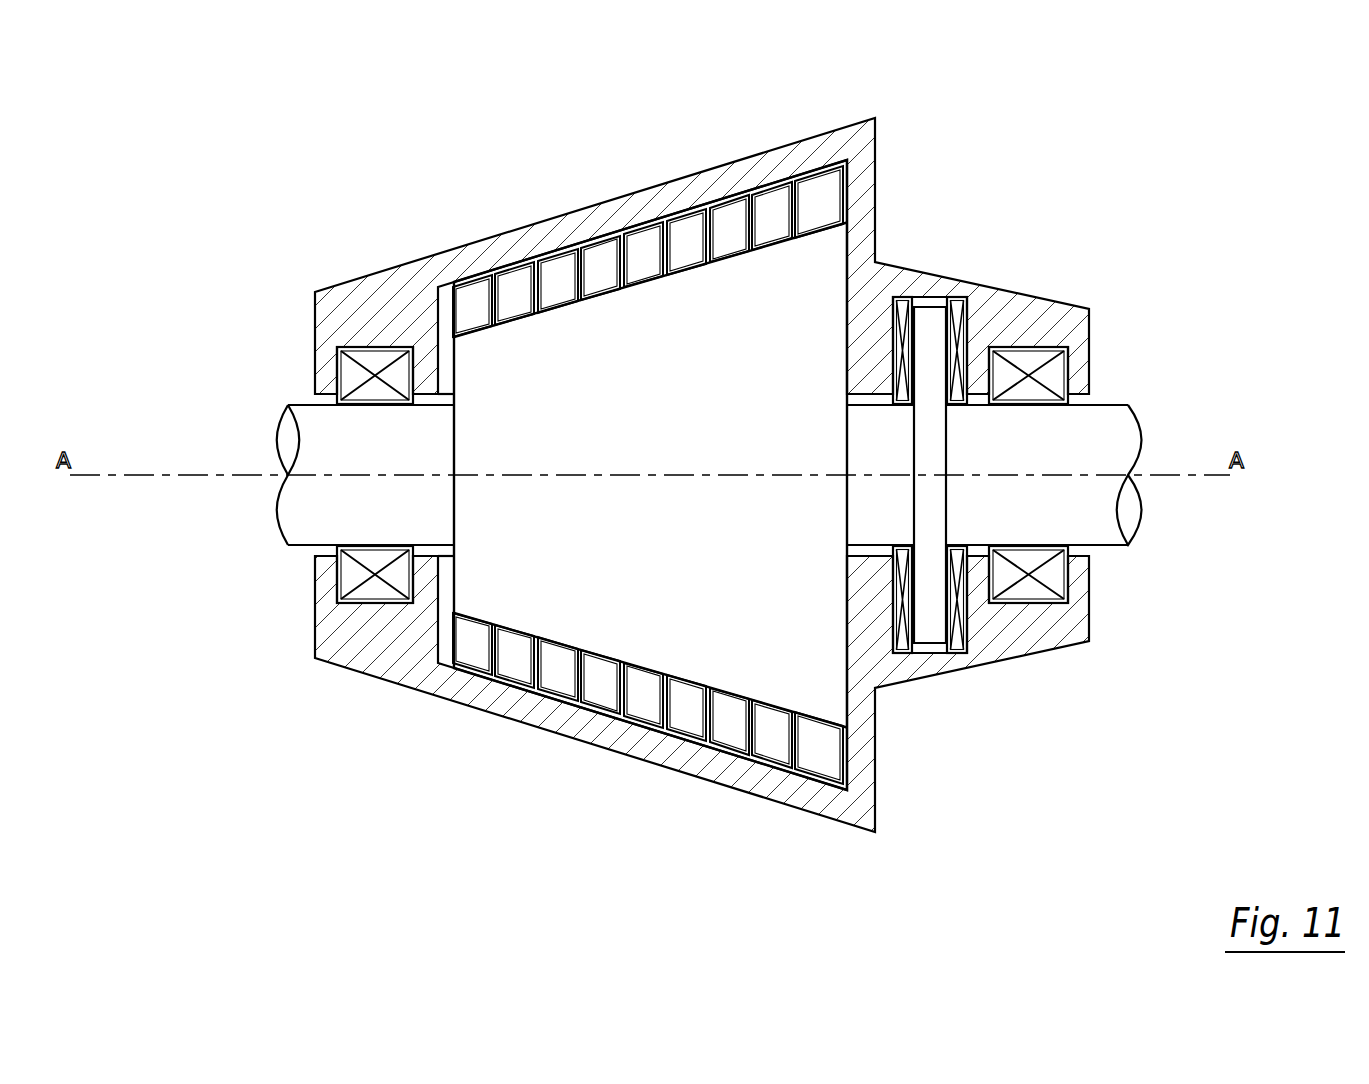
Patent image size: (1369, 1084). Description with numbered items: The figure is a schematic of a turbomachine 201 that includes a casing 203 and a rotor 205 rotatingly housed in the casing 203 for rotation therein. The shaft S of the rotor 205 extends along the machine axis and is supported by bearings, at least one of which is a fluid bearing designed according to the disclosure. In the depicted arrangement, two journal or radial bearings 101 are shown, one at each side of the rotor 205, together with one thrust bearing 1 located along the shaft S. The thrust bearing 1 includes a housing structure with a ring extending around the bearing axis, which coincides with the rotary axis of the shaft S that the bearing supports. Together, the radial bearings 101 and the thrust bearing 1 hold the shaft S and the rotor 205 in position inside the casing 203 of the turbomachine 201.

The turbomachine 201 is at (393, 165).
The casing 203 is at (588, 224).
The rotor 205 is at (752, 414).
The journal or radial bearings 101 is at (348, 371).
The thrust bearing 1 is at (927, 317).
The shaft S is at (1100, 437).